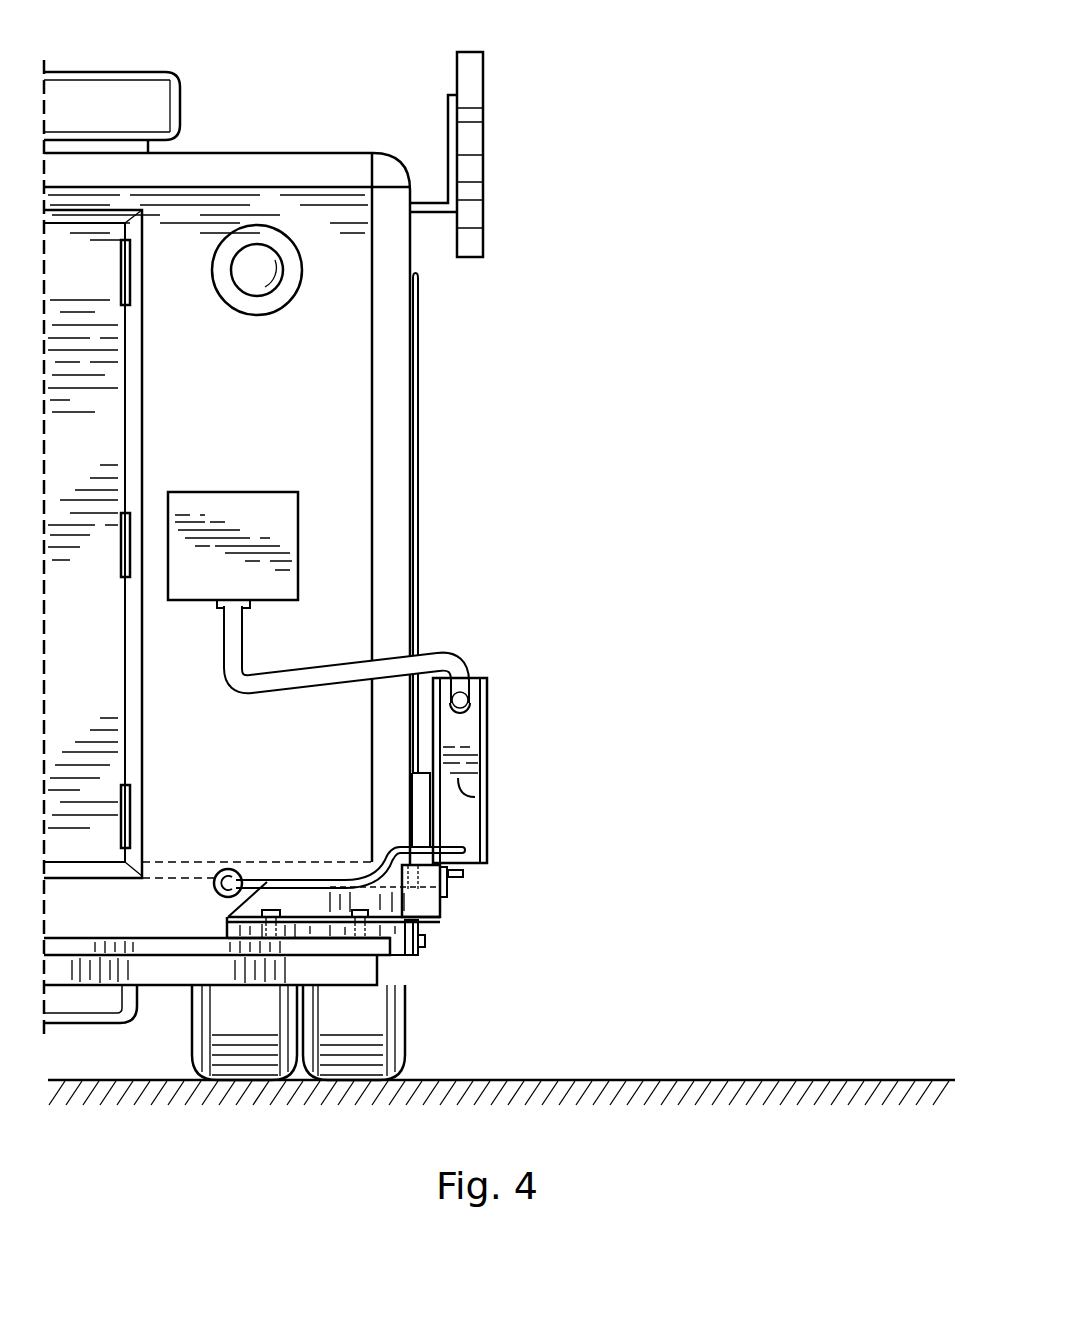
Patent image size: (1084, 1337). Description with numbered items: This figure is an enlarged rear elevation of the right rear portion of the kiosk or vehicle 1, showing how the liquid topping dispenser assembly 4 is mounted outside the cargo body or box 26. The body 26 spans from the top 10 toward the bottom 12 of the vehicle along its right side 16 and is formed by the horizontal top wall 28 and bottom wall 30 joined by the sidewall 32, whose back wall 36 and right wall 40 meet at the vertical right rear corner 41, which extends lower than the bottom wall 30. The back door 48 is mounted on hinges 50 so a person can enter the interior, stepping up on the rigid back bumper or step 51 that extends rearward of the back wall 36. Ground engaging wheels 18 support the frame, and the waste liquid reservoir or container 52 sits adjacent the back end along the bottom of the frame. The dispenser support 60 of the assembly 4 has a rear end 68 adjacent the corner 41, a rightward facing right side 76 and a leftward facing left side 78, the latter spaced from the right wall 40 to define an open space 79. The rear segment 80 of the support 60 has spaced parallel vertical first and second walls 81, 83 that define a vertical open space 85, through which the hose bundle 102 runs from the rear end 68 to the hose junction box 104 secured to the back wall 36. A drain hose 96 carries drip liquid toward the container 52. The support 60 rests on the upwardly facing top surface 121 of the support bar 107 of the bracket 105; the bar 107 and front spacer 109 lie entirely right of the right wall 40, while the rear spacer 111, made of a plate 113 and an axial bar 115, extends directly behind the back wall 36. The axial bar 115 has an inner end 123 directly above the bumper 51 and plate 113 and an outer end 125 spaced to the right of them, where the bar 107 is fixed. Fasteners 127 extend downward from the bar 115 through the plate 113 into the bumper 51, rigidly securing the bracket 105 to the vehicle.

The kiosk or vehicle 1 is at (592, 160).
The liquid topping dispenser assembly 4 is at (527, 770).
The top 10 is at (206, 124).
The bottom 12 is at (259, 1047).
The right side 16 is at (547, 331).
The ground engaging wheels 18 is at (407, 1027).
The cargo body or box 26 is at (299, 226).
The top wall 28 is at (337, 153).
The bottom wall 30 is at (180, 868).
The sidewall 32 is at (506, 154).
The back wall 36 is at (172, 389).
The right wall 40 is at (410, 242).
The right rear corner 41 is at (398, 368).
The back door 48 is at (95, 695).
The hinges 50 is at (121, 263).
The back bumper or step 51 is at (70, 938).
The waste liquid reservoir or container 52 is at (90, 1003).
The dispenser support 60 is at (490, 739).
The rear end 68 is at (483, 763).
The right side or surface 76 is at (494, 704).
The left side or surface 78 is at (353, 770).
The open space 79 is at (425, 753).
The rear segment 80 is at (560, 770).
The first wall 81 is at (560, 770).
The second wall 83 is at (433, 712).
The open space 85 is at (485, 788).
The drain hose 96 is at (402, 859).
The hose bundle 102 is at (233, 672).
The hose cover or hose junction box 104 is at (254, 512).
The bracket 105 is at (482, 896).
The support bar 107 is at (453, 893).
The front spacer or mounting member 109 is at (422, 957).
The rear spacer or mounting member 111 is at (337, 932).
The plate 113 is at (232, 932).
The axial bar 115 is at (292, 907).
The top surface 121 is at (455, 847).
The inner or left end 123 is at (228, 917).
The outer or right end 125 is at (426, 941).
The fasteners 127 is at (360, 908).